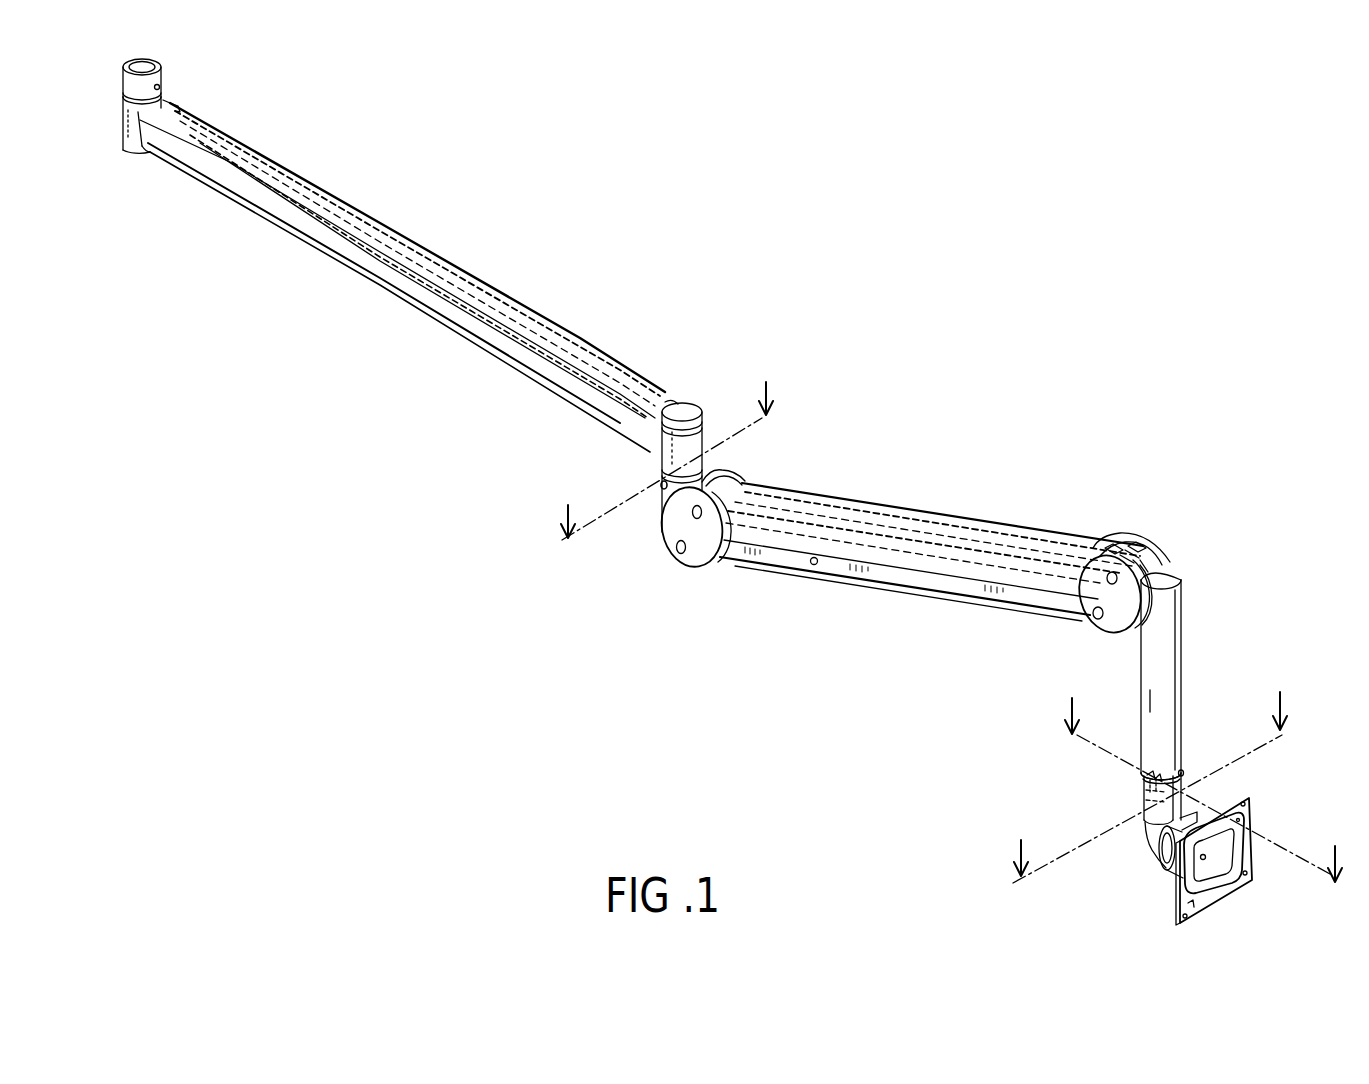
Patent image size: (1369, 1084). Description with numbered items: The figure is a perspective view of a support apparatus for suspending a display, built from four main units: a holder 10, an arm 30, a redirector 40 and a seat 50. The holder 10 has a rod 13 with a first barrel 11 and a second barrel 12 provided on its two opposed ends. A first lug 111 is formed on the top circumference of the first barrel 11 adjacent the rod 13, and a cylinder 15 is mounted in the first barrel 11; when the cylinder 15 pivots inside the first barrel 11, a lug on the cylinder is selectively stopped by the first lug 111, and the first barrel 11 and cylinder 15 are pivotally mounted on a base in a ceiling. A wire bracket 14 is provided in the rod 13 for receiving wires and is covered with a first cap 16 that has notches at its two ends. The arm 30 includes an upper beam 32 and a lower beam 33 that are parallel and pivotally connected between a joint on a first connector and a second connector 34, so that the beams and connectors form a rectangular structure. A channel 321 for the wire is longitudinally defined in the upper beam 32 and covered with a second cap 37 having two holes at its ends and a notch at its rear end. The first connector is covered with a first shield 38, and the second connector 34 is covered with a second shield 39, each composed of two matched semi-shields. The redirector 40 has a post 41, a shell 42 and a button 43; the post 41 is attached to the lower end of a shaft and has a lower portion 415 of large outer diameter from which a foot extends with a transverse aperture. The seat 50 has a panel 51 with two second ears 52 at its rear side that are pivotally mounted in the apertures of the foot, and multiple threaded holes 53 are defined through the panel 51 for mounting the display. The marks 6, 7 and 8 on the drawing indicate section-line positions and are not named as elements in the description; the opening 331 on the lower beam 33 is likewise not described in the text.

The holder 10 is at (340, 294).
The first barrel 11 is at (128, 118).
The second barrel 12 is at (667, 440).
The rod 13 is at (223, 187).
The wire bracket 14 is at (458, 264).
The cylinder 15 is at (128, 92).
The first cap 16 is at (330, 207).
The first lug 111 is at (170, 106).
The arm 30 is at (866, 598).
The upper beam 32 is at (815, 496).
The channel 321 is at (960, 522).
The lower beam 33 is at (958, 592).
The screw hole 331 is at (810, 566).
The second connector 34 is at (1148, 546).
The second cap 37 is at (1047, 582).
The first shield 38 is at (676, 540).
The second shield 39 is at (1186, 572).
The redirector 40 is at (1118, 807).
The post 41 is at (1150, 801).
The shell 42 is at (1172, 796).
The button 43 is at (1147, 774).
The lower portion 415 is at (1152, 837).
The seat 50 is at (1256, 825).
The panel 51 is at (1237, 885).
The second ears 52 is at (1210, 838).
The threaded holes 53 is at (1188, 906).
The section line 6- 6 is at (664, 442).
The section line 7- 7 is at (1203, 771).
The section line 8- 8 is at (1148, 768).